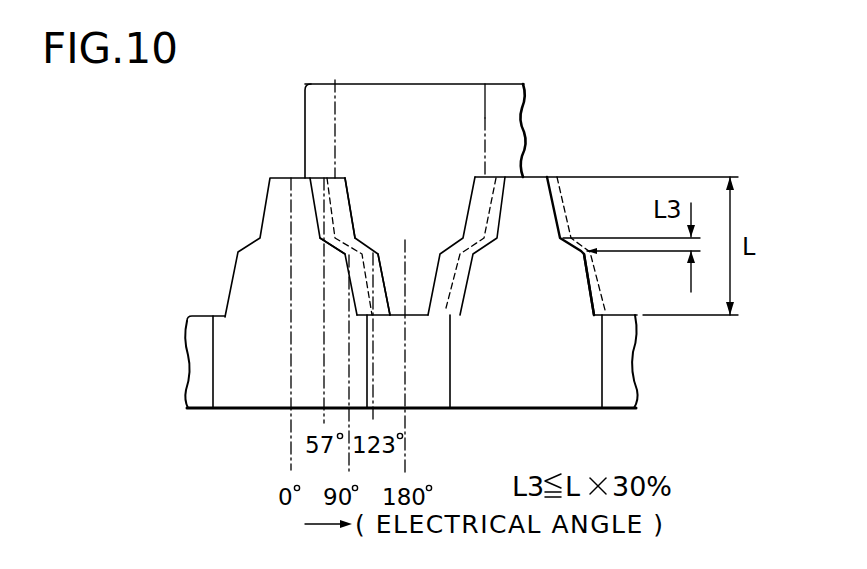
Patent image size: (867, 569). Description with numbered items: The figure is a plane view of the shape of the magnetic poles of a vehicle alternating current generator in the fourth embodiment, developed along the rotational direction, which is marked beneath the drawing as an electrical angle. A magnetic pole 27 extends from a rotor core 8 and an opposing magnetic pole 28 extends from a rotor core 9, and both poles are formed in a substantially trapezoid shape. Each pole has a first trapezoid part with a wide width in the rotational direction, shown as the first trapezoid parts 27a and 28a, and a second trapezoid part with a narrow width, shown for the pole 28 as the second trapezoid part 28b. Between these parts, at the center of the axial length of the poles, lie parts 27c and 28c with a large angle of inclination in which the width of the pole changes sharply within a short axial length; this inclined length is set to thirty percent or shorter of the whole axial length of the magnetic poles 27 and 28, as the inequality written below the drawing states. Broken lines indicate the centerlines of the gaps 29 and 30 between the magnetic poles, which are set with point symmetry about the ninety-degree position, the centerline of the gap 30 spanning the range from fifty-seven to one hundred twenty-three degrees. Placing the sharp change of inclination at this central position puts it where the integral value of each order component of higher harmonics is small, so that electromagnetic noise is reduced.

The rotor core 8 is at (553, 387).
The rotor core 9 is at (457, 107).
The magnetic pole 27 is at (551, 198).
The first trapezoid part 27a is at (590, 283).
The part with a large angle of inclination 27c is at (584, 241).
The magnetic pole 28 is at (387, 237).
The first trapezoid part 28a is at (356, 195).
The second trapezoid part 28b is at (383, 278).
The part with a large angle of inclination 28c is at (370, 238).
The gap between the magnetic poles 29 is at (497, 187).
The gap between the magnetic poles 30 is at (320, 205).